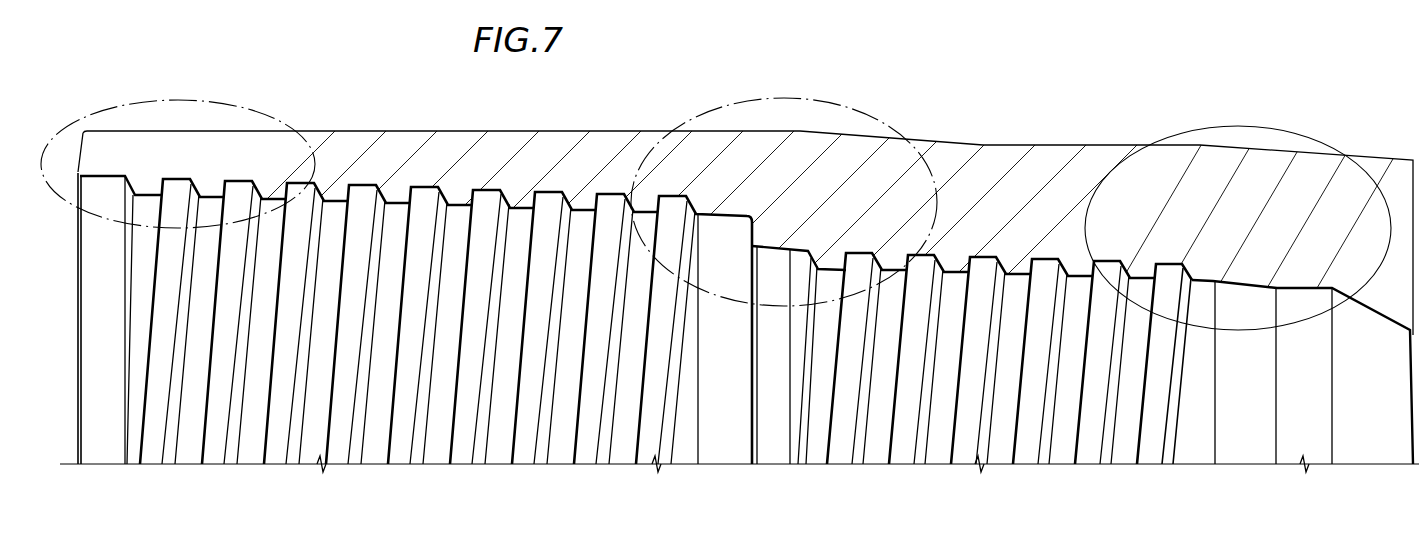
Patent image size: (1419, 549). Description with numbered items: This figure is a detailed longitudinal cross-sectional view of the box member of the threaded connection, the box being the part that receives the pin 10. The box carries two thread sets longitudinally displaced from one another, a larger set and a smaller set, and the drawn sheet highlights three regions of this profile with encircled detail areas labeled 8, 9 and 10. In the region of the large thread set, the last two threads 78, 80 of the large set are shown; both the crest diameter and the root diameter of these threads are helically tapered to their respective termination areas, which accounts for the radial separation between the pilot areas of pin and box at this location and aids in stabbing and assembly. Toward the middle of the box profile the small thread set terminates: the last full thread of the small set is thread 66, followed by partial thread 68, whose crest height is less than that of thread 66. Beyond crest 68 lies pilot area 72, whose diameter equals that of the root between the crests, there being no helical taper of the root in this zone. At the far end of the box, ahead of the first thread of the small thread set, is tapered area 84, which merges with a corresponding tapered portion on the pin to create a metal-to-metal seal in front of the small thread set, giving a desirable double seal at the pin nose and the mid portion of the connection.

The first thread portion 8 is at (175, 98).
The second thread portion 9 is at (785, 98).
The pin 10 is at (1284, 129).
The thread of the large thread set on the box 78 is at (212, 193).
The thread of the large thread set on the box 80 is at (123, 248).
The partial thread 68 is at (833, 259).
The last full thread of the small thread set 66 is at (886, 264).
The pilot area 72 is at (795, 255).
The tapered area 84 is at (1242, 288).